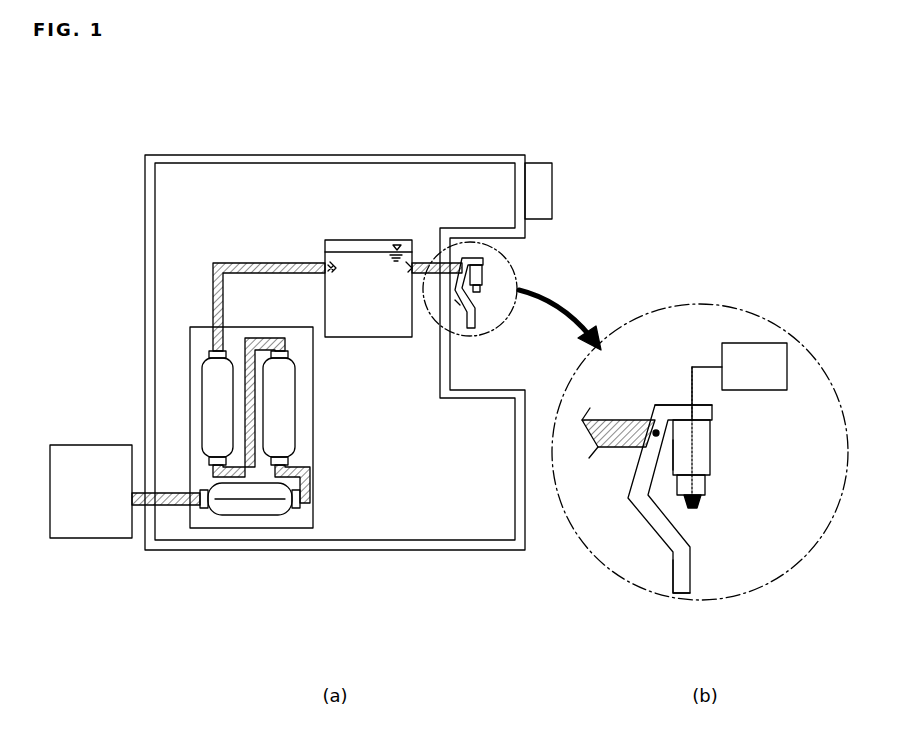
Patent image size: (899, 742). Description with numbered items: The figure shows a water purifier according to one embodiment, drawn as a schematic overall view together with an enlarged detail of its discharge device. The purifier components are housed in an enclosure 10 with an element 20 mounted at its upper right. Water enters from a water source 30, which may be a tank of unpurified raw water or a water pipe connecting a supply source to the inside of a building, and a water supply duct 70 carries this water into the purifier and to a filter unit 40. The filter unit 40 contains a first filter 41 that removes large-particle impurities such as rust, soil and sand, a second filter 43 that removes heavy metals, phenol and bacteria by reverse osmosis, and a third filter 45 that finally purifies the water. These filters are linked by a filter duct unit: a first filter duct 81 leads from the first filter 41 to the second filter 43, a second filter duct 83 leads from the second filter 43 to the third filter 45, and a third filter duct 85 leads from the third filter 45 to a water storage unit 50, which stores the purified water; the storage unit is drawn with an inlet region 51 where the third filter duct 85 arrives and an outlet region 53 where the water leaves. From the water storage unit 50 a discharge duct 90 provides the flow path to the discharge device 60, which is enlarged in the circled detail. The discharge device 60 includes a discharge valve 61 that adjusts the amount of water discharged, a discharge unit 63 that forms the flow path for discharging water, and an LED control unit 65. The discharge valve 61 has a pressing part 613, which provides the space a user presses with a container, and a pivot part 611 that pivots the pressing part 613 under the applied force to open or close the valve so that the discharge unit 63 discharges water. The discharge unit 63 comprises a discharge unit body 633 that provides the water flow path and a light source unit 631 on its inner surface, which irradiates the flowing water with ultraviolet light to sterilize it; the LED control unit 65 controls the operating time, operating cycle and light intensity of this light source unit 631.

The main body housing 10 is at (230, 158).
The control panel 20 is at (552, 170).
The water source 30 is at (77, 527).
The filter unit 40 is at (235, 526).
The first filter 41 is at (268, 508).
The second filter 43 is at (288, 417).
The third filter 45 is at (207, 417).
The water storage unit 50 is at (393, 338).
The tank inlet 51 is at (335, 258).
The tank outlet 53 is at (413, 263).
The discharge device 60 is at (617, 233).
The discharge valve 61 is at (480, 261).
The discharge unit 63 is at (482, 272).
The LED control unit 65 is at (753, 352).
The water supply duct 70 is at (170, 506).
The first filter duct 81 is at (312, 480).
The second filter duct 83 is at (265, 338).
The third filter duct 85 is at (248, 265).
The discharge duct 90 is at (425, 275).
The pivot part 611 is at (643, 447).
The pressing part 613 is at (678, 580).
The light source unit 631 is at (701, 498).
The discharge unit body 633 is at (697, 445).